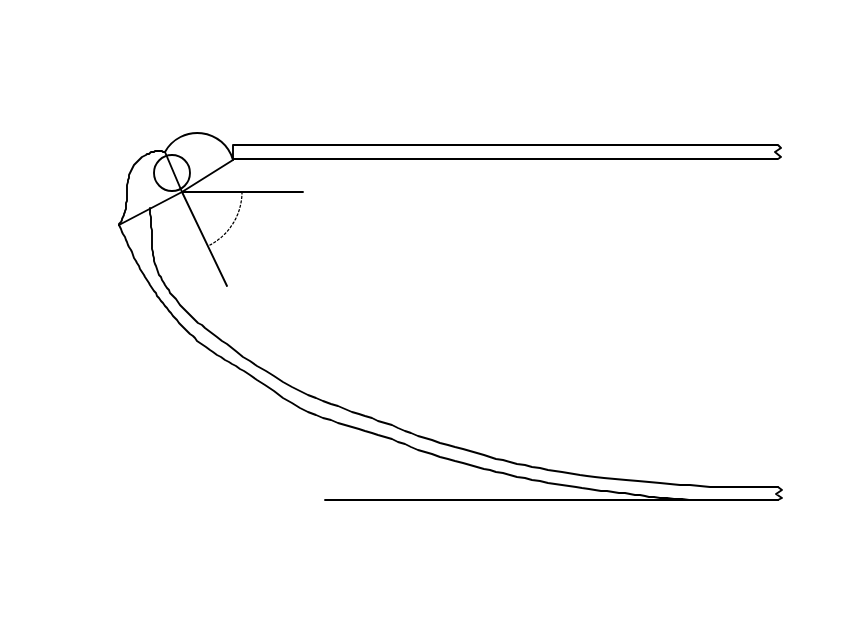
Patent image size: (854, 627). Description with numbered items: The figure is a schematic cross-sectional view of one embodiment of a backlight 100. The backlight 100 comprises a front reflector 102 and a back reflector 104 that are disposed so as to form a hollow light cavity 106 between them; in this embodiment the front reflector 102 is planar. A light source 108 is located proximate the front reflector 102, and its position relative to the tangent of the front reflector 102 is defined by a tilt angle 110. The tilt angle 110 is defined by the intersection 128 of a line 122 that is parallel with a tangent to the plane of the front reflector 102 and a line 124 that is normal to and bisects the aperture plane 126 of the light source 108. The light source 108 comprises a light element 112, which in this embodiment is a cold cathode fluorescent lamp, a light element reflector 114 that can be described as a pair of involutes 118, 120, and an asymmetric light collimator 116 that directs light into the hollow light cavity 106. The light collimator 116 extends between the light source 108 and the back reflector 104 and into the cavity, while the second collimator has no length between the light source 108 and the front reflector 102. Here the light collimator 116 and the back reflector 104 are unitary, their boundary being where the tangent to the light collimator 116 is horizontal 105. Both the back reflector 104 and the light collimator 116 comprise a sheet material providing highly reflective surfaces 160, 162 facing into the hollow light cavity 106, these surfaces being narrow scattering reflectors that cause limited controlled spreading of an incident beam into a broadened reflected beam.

The backlight 100 is at (146, 52).
The front reflector 102 is at (732, 145).
The back reflector 104 is at (747, 500).
The horizontal 105 is at (710, 500).
The hollow light cavity 106 is at (562, 314).
The light source 108 is at (134, 136).
The tilt angle 110 is at (238, 222).
The light element 112 is at (177, 155).
The light element reflector 114 is at (120, 177).
The asymmetric light collimator 116 is at (203, 347).
The involute 118 is at (193, 134).
The involute 120 is at (127, 203).
The line parallel with tangent to front reflector 122 is at (283, 192).
The line normal to aperture plane 124 is at (213, 262).
The aperture plane 126 is at (151, 244).
The intersection 128 is at (211, 172).
The reflective surface 160 is at (664, 481).
The reflective surface 162 is at (288, 384).